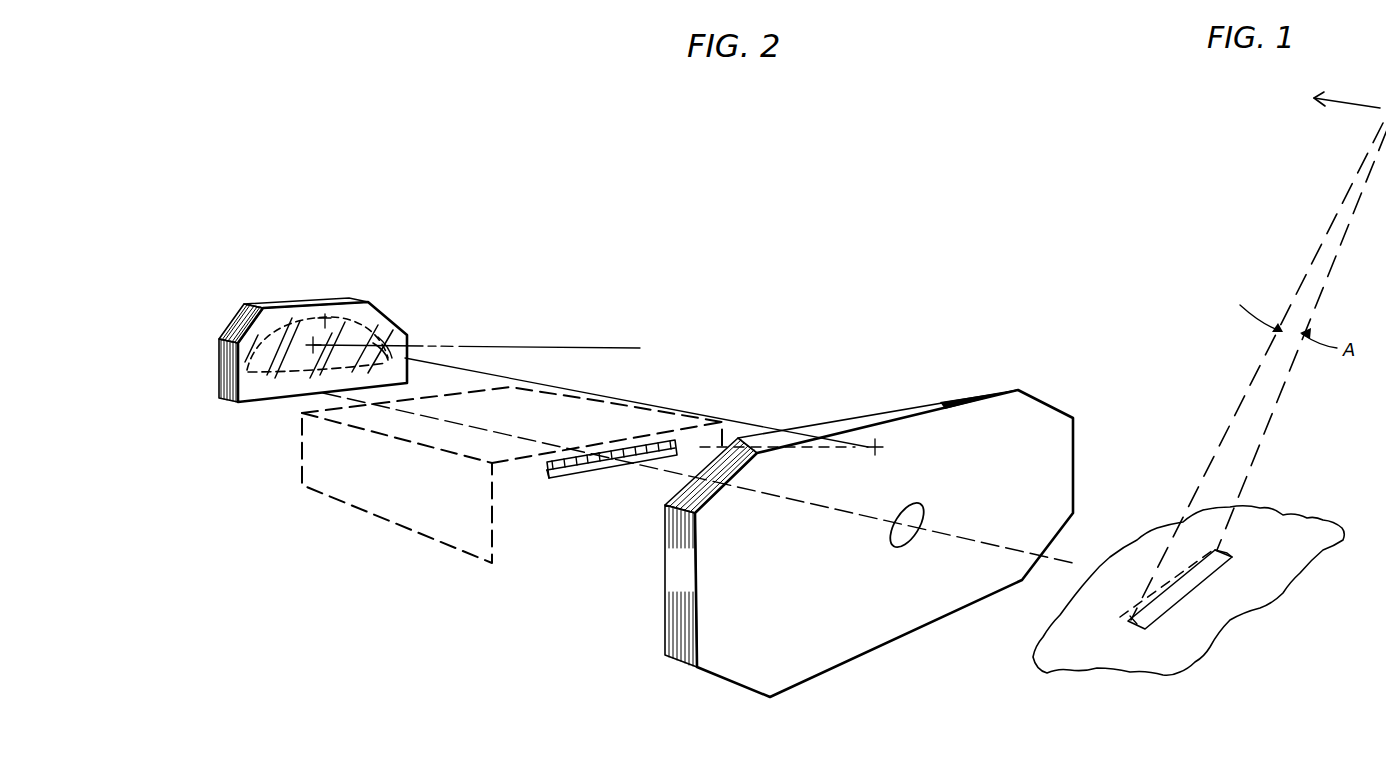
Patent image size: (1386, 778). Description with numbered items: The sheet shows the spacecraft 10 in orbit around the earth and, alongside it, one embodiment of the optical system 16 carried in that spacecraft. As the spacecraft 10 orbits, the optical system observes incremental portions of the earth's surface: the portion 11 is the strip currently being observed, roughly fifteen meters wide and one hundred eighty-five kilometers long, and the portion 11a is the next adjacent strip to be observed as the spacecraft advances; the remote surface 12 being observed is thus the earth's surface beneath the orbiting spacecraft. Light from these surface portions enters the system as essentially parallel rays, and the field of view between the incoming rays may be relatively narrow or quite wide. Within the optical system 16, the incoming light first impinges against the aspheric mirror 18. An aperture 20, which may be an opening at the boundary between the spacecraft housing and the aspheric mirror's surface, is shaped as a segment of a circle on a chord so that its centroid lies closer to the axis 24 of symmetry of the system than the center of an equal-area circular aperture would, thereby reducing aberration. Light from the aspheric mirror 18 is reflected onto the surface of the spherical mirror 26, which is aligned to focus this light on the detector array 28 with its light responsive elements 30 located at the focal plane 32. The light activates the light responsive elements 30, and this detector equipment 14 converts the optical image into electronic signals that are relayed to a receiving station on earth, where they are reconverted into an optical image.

In FIG. 1, the spacecraft 10 is at (1378, 115).
In FIG. 1, the surface portion 11 is at (1222, 560).
In FIG. 1, the next surface portion 11a is at (1183, 562).
In FIG. 1, the document 12 is at (1316, 522).
In FIG. 2, the detector equipment 14 is at (304, 472).
In FIG. 2, the optical system 16 is at (710, 308).
In FIG. 2, the aspheric mirror 18 is at (386, 332).
In FIG. 2, the aperture 20 is at (330, 300).
In FIG. 2, the axis of symmetry 24 is at (858, 516).
In FIG. 2, the spherical mirror 26 is at (937, 404).
In FIG. 2, the detector array 28 is at (661, 438).
In FIG. 2, the light responsive elements 30 is at (619, 451).
In FIG. 2, the focal plane 32 is at (555, 478).